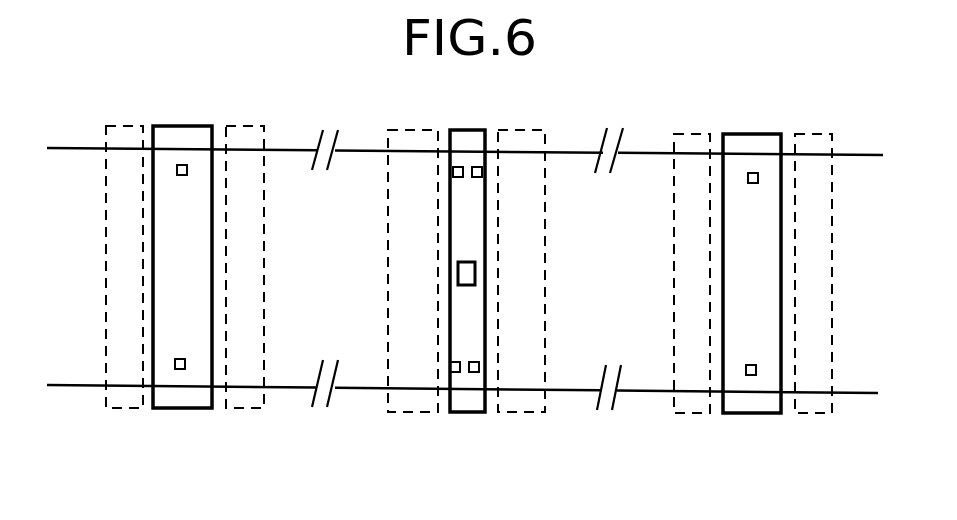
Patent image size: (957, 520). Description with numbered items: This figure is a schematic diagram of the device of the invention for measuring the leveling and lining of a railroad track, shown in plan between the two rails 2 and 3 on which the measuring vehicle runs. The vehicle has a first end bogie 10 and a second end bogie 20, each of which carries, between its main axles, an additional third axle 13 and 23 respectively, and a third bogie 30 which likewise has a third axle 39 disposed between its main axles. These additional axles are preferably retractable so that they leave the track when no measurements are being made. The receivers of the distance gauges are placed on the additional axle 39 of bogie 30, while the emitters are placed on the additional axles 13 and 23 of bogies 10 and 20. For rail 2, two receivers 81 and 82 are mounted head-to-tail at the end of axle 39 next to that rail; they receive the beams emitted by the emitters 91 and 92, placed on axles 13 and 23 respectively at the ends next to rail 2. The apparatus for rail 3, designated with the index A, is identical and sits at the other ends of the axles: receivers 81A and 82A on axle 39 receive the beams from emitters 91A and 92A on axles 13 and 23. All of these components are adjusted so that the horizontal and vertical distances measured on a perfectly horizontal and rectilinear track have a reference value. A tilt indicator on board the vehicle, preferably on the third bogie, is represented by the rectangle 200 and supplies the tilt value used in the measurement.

The rail 2 is at (75, 148).
The rail 3 is at (73, 387).
The first end bogie 10 is at (208, 305).
The third axle 13 is at (190, 259).
The second end bogie 20 is at (781, 311).
The third axle 23 is at (757, 263).
The bogie 30 is at (473, 307).
The third axle 39 is at (467, 300).
The tilt indicator 200 is at (458, 271).
The receiver 81 is at (453, 172).
The receiver 82 is at (482, 172).
The receiver 81A is at (455, 367).
The receiver 82A is at (479, 367).
The emitter 91 is at (187, 170).
The emitter 91A is at (185, 364).
The emitter 92 is at (758, 178).
The emitter 92A is at (756, 370).